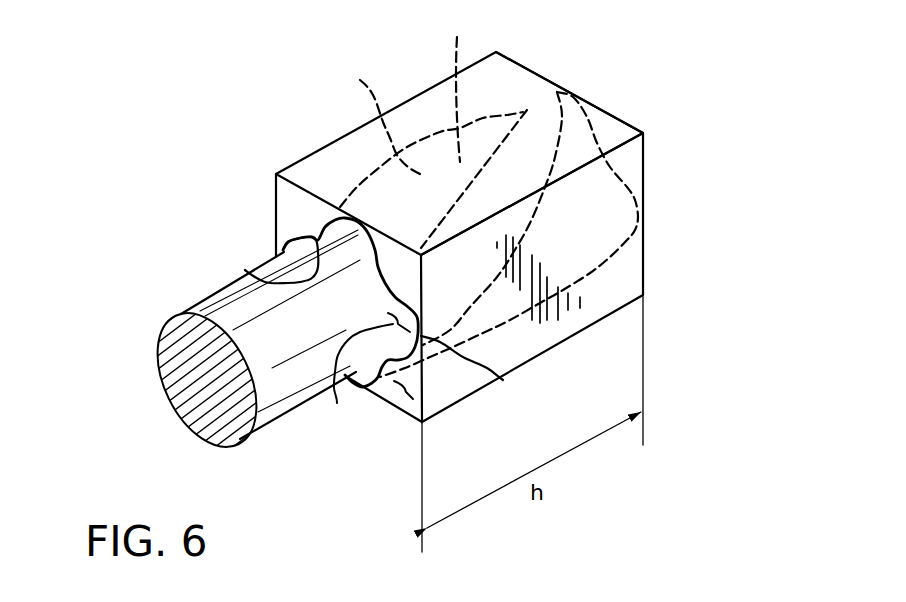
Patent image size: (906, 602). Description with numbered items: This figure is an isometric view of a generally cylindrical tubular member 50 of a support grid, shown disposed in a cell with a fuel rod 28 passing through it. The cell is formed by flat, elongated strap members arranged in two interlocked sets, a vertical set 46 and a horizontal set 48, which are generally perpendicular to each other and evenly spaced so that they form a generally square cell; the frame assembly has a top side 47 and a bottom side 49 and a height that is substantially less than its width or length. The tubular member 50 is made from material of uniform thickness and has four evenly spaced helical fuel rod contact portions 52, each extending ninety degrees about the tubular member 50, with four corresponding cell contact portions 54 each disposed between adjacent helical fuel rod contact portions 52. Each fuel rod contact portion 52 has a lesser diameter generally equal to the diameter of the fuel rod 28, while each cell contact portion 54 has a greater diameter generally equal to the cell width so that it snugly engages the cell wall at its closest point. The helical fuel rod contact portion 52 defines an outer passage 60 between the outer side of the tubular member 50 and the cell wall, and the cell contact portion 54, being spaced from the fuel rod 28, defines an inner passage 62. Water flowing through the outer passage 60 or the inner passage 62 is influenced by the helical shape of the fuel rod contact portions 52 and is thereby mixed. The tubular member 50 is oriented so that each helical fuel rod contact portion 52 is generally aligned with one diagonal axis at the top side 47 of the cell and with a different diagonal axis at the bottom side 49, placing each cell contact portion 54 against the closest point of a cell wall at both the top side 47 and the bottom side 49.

The fuel rod 28 is at (160, 387).
The vertical set of strap members 46 is at (627, 271).
The top side 47 is at (378, 394).
The horizontal set of strap members 48 is at (498, 83).
The bottom side 49 is at (619, 119).
The tubular member 50 is at (361, 81).
The helical fuel rod contact portion 52 is at (457, 38).
The cell contact portion 54 is at (357, 220).
The outer passage 60 is at (395, 397).
The inner passage 62 is at (337, 403).